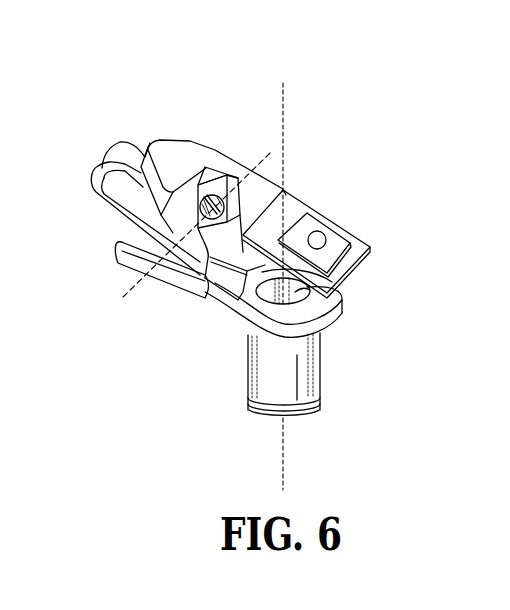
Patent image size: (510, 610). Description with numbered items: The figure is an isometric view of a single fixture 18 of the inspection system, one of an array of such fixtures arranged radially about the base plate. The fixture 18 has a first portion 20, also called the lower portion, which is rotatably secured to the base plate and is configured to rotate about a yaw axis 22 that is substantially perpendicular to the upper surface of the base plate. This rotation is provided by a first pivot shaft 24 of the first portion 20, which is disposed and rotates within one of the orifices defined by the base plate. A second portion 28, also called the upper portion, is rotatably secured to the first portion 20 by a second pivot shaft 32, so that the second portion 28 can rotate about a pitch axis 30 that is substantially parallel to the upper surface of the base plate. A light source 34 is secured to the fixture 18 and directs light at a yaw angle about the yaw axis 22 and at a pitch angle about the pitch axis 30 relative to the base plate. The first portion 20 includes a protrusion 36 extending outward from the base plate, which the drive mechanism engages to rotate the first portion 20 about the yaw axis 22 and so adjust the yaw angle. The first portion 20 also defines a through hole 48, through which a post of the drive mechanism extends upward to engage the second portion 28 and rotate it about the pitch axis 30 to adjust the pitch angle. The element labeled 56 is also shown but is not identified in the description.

The fixture 18 is at (135, 102).
The first portion 20 is at (289, 347).
The yaw axis 22 is at (285, 118).
The first pivot shaft 24 is at (325, 366).
The second portion 28 is at (268, 180).
The pitch axis 30 is at (133, 290).
The second pivot shaft 32 is at (197, 200).
The light source 34 is at (340, 238).
The protrusion 36 is at (113, 253).
The through hole 48 is at (338, 318).
The spring clip 56 is at (108, 153).